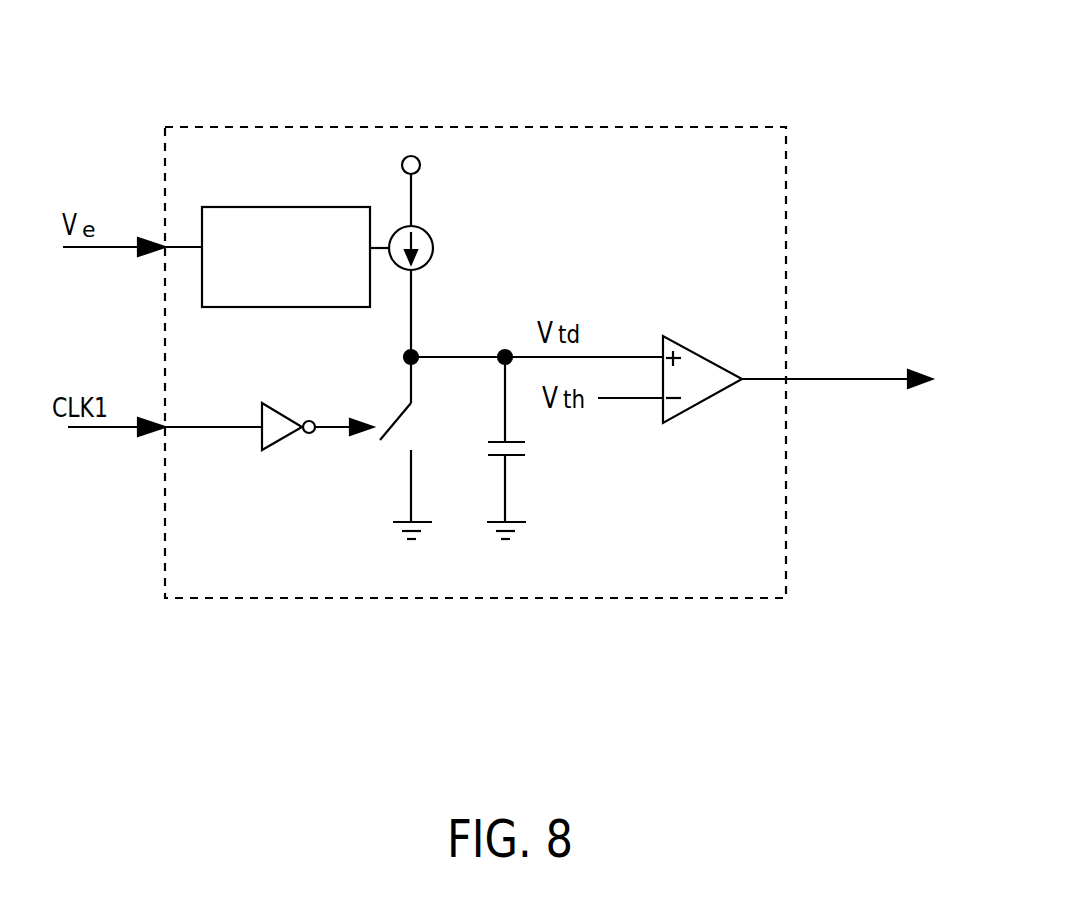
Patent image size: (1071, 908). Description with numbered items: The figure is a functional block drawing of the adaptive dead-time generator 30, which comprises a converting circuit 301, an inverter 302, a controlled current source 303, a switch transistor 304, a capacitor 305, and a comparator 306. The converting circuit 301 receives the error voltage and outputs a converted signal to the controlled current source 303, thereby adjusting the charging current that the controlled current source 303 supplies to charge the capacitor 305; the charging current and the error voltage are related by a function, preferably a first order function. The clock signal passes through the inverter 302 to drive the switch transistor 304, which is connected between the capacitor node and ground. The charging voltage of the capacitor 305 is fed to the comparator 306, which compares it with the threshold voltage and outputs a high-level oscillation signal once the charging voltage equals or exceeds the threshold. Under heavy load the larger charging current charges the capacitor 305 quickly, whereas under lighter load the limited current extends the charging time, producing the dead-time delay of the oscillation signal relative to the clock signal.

The adaptive dead-time generator 30 is at (763, 126).
The converting circuit 301 is at (225, 207).
The inverter 302 is at (283, 403).
The controlled current source 303 is at (425, 231).
The switch transistor 304 is at (397, 447).
The capacitor 305 is at (530, 458).
The comparator 306 is at (708, 352).